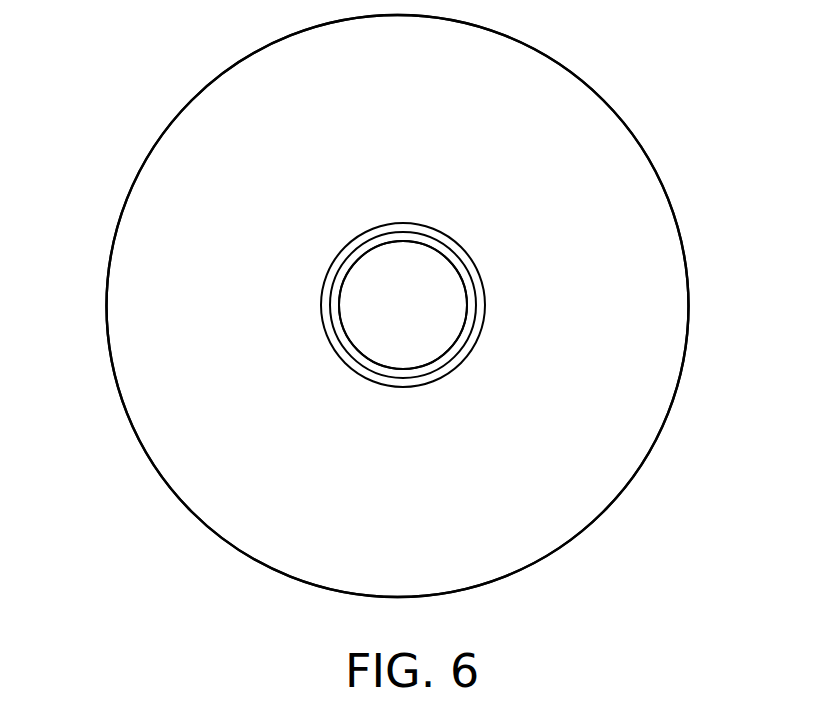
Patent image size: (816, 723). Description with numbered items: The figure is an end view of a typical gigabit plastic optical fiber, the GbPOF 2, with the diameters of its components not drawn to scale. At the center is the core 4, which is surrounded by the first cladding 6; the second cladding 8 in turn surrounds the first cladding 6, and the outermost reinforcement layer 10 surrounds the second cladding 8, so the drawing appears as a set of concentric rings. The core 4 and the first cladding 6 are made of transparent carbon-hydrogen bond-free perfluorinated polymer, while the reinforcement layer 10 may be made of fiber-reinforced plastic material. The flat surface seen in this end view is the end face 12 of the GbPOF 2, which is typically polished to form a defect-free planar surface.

The GbPOF 2 is at (584, 74).
The core 4 is at (443, 257).
The first cladding 6 is at (455, 357).
The second cladding 8 is at (321, 301).
The reinforcement layer 10 is at (187, 105).
The end face 12 is at (388, 260).